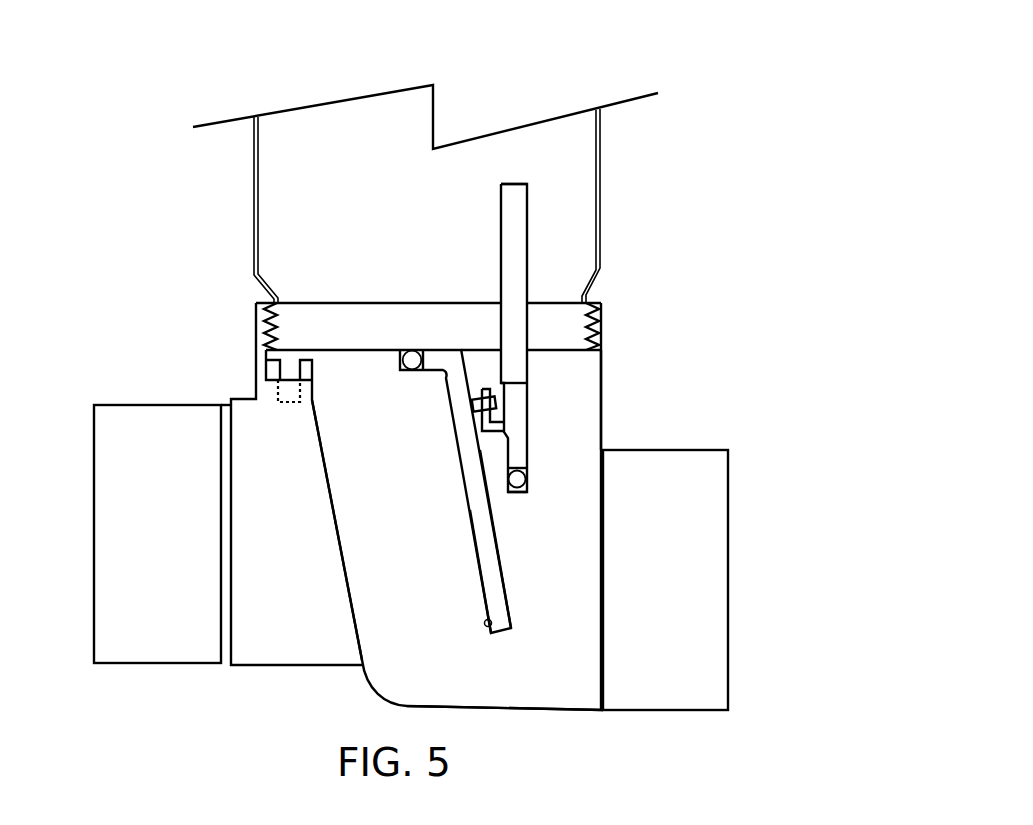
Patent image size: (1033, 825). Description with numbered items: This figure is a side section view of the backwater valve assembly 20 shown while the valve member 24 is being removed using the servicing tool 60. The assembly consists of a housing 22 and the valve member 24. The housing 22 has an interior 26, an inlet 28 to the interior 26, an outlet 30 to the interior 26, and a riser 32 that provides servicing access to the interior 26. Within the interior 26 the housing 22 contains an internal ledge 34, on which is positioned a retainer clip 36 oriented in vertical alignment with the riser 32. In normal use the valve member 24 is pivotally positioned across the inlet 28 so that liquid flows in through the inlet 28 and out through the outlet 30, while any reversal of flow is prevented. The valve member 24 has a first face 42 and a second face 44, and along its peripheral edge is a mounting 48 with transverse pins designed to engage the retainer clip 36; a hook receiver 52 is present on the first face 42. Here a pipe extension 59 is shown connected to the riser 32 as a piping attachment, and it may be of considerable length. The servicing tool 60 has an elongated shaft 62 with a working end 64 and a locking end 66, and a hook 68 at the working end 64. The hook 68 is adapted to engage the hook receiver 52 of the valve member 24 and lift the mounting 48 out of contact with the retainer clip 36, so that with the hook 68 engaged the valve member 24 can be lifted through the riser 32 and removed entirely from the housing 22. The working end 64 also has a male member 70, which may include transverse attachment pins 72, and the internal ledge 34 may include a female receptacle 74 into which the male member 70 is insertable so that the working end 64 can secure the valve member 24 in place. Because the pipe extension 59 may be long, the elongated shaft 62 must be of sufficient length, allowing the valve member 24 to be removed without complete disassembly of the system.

The backwater valve assembly 20 is at (204, 280).
The housing 22 is at (603, 368).
The valve member 24 is at (475, 562).
The interior 26 is at (525, 693).
The inlet 28 is at (130, 665).
The outlet 30 is at (665, 712).
The riser 32 is at (600, 400).
The internal ledge 34 is at (267, 382).
The retainer clip 36 is at (288, 398).
The first face 42 is at (493, 518).
The second face 44 is at (467, 505).
The mounting 48 is at (408, 357).
The hook receiver 52 is at (445, 443).
The pipe extension 59 is at (598, 180).
The servicing tool 60 is at (527, 198).
The elongated shaft 62 is at (527, 278).
The working end 64 is at (528, 472).
The locking end 66 is at (512, 182).
The hook 68 is at (486, 397).
The male member 70 is at (530, 478).
The transverse attachment pins 72 is at (530, 483).
The female receptacle 74 is at (272, 369).